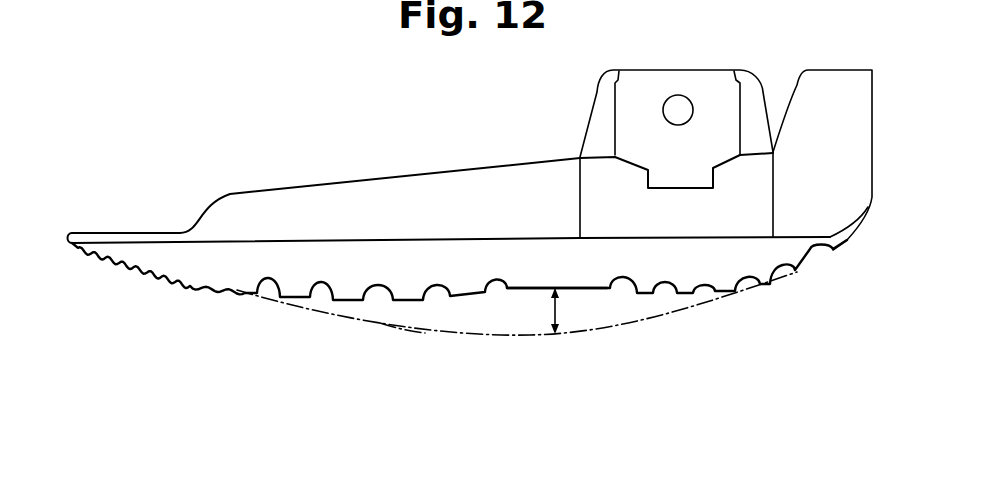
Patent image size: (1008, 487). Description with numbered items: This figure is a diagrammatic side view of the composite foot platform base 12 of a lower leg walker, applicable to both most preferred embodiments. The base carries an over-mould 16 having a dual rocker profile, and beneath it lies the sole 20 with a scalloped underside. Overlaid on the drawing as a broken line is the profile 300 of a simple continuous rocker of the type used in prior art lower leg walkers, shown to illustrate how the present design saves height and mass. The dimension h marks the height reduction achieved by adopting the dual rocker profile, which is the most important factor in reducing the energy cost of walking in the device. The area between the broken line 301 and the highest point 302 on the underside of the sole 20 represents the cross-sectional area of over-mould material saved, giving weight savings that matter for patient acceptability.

The foot platform base 12 is at (198, 290).
The sole 20 is at (338, 302).
The over-mould 16 is at (782, 238).
The profile 300 is at (405, 333).
The broken line 301 is at (448, 333).
The highest point 302 is at (532, 288).
The dimension h is at (557, 303).